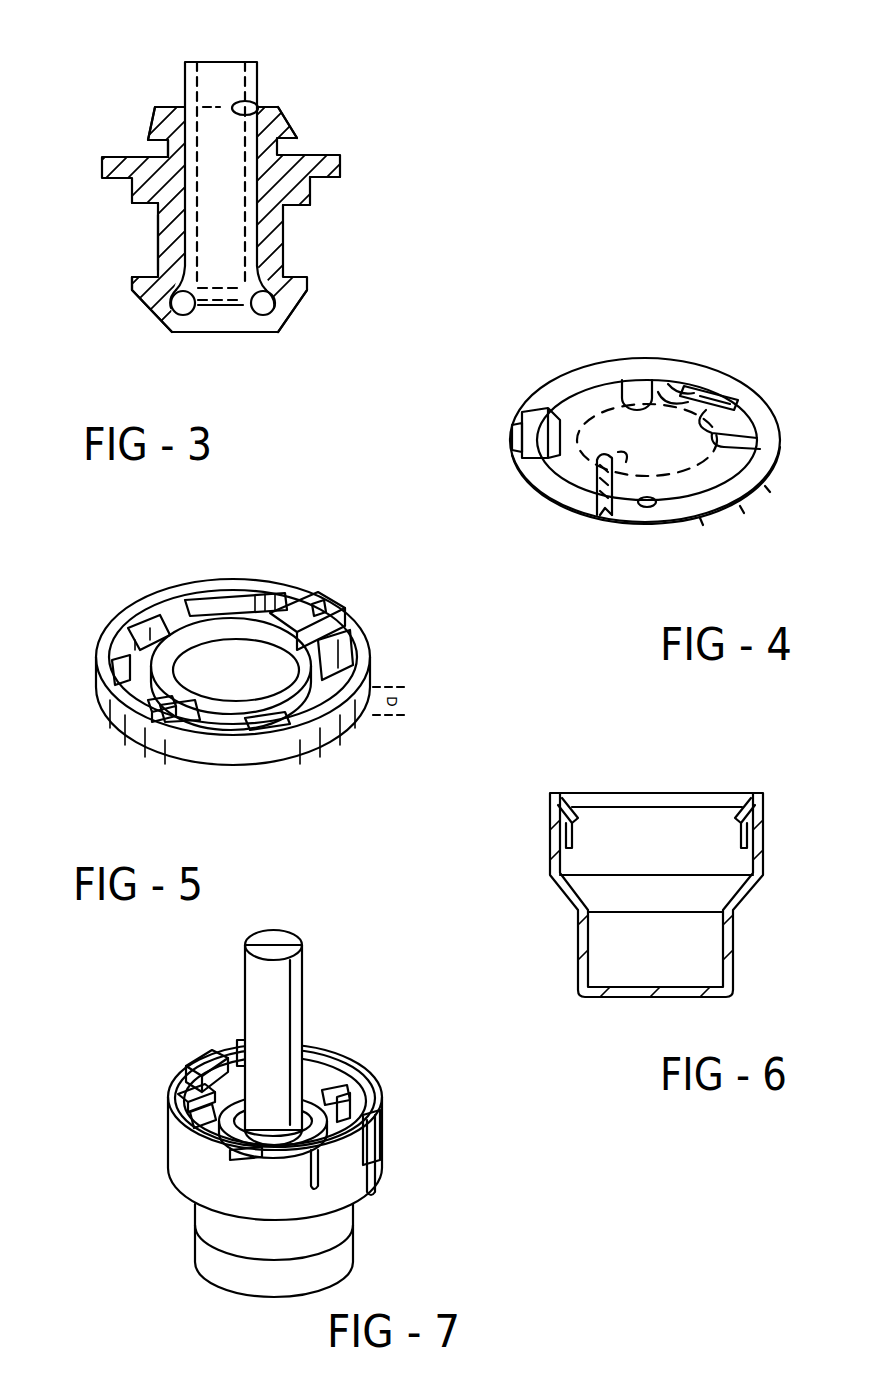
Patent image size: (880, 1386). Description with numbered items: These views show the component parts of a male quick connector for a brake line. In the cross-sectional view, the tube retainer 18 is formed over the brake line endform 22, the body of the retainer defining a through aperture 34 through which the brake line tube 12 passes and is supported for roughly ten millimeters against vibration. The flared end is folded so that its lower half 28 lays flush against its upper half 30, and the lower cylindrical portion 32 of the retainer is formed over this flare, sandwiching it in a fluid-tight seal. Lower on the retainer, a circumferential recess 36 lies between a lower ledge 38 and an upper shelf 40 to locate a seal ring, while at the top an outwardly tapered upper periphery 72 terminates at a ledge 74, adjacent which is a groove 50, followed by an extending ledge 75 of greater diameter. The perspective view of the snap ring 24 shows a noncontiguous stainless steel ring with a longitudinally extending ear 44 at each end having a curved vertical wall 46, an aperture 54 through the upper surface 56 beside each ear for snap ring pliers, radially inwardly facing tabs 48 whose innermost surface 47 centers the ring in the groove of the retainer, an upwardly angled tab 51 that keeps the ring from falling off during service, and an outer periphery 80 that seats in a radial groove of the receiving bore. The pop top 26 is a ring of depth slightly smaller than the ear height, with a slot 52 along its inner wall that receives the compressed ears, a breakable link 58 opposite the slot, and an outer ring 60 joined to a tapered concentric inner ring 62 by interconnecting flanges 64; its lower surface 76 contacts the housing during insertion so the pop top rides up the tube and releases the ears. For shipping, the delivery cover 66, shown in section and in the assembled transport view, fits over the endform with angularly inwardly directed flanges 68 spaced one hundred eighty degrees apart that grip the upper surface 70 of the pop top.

In FIG. 3, the brake line tube 12 is at (185, 78).
In FIG. 7, the brake line tube 12 is at (302, 978).
In FIG. 3, the tube retainer 18 is at (320, 153).
In FIG. 7, the tube retainer 18 is at (312, 1100).
In FIG. 3, the brake line endform 22 is at (170, 328).
In FIG. 4, the snap ring 24 is at (648, 352).
In FIG. 5, the pop top 26 is at (135, 598).
In FIG. 7, the pop top 26 is at (360, 1090).
In FIG. 3, the lower half of the flared end 28 is at (240, 338).
In FIG. 3, the upper half of the flared end 30 is at (275, 280).
In FIG. 3, the lower cylindrical portion 32 is at (285, 313).
In FIG. 3, the through aperture 34 is at (238, 103).
In FIG. 3, the circumferential recess 36 is at (157, 237).
In FIG. 3, the lower ledge 38 is at (135, 280).
In FIG. 3, the upper shelf 40 is at (140, 212).
In FIG. 4, the ear 44 is at (595, 490).
In FIG. 4, the curved vertical wall 46 is at (544, 415).
In FIG. 4, the innermost surface 47 is at (616, 385).
In FIG. 4, the tab 48 is at (668, 378).
In FIG. 3, the groove 50 is at (165, 148).
In FIG. 4, the angled tab 51 is at (716, 385).
In FIG. 5, the slot 52 is at (150, 702).
In FIG. 4, the aperture 54 is at (510, 425).
In FIG. 4, the upper surface 56 is at (770, 465).
In FIG. 5, the breakable link 58 is at (320, 610).
In FIG. 5, the outer ring 60 is at (185, 755).
In FIG. 5, the inner ring 62 is at (190, 640).
In FIG. 5, the interconnecting flange 64 is at (185, 598).
In FIG. 6, the delivery cover 66 is at (758, 885).
In FIG. 7, the delivery cover 66 is at (355, 1235).
In FIG. 6, the angularly inwardly directed flange 68 is at (575, 800).
In FIG. 7, the angularly inwardly directed flange 68 is at (208, 1048).
In FIG. 5, the upper surface of the pop top 70 is at (225, 578).
In FIG. 7, the upper surface of the pop top 70 is at (185, 1100).
In FIG. 3, the upper periphery 72 is at (148, 115).
In FIG. 3, the ledge 74 is at (300, 135).
In FIG. 3, the extending ledge 75 is at (340, 170).
In FIG. 5, the lower surface of the pop top 76 is at (253, 770).
In FIG. 4, the outer periphery 80 is at (730, 512).